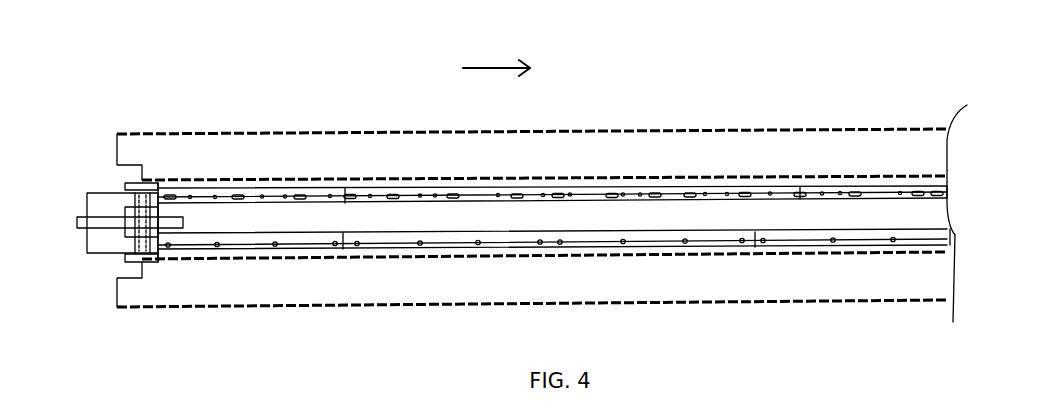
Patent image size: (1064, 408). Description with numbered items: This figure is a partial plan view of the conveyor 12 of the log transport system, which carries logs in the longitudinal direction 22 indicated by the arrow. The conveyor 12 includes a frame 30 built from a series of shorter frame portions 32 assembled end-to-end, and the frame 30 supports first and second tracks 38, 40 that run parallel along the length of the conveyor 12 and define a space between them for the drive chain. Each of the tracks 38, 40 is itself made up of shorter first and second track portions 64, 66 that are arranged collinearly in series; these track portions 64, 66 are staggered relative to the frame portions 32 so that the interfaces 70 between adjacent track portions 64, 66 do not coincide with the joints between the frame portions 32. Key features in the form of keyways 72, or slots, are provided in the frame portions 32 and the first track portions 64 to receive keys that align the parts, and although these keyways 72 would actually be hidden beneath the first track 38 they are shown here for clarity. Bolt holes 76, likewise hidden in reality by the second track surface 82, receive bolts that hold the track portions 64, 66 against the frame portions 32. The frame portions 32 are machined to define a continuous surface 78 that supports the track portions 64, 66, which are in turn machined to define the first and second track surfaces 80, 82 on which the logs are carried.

The conveyor 12 is at (757, 86).
The longitudinal direction 22 is at (489, 66).
The frame 30 is at (221, 256).
The frame portions 32 is at (300, 257).
The first track 38 is at (262, 192).
The second track 40 is at (377, 244).
The first track portions 64 is at (325, 190).
The second track portions 66 is at (257, 246).
The interfaces between adjacent track portions 70 is at (352, 190).
The keyways 72 is at (390, 193).
The bolt holes 76 is at (748, 190).
The continuous surface 78 is at (587, 226).
The first track surface 80 is at (947, 194).
The second track surface 82 is at (963, 232).